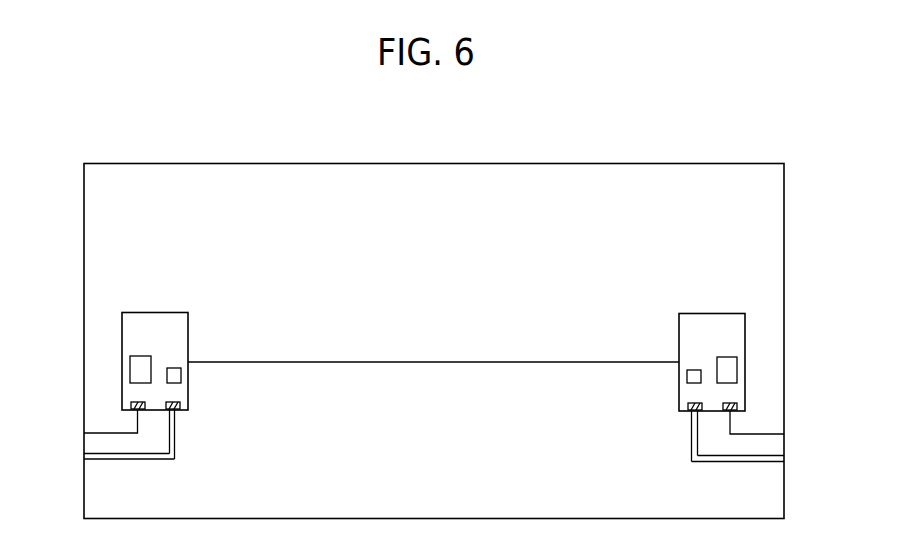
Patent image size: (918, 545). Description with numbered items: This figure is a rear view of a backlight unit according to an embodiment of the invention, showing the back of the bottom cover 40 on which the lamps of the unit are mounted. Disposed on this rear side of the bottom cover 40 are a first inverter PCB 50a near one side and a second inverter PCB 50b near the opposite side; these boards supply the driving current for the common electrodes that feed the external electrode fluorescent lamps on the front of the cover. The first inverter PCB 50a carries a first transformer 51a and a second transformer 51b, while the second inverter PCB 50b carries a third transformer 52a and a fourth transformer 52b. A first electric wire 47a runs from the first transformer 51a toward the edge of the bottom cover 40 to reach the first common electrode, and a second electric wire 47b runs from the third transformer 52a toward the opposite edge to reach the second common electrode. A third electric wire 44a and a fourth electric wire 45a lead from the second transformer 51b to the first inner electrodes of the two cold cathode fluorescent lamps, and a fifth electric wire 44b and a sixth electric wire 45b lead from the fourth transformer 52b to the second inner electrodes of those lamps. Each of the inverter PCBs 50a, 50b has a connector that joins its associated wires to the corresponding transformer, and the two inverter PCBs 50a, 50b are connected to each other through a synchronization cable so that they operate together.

The bottom cover 40 is at (673, 164).
The first inverter PCB 50a is at (160, 312).
The second inverter PCB 50b is at (710, 314).
The first transformer 51a is at (135, 356).
The second transformer 51b is at (173, 368).
The third transformer 52a is at (695, 370).
The fourth transformer 52b is at (731, 357).
The first electric wire 47a is at (108, 433).
The second electric wire 47b is at (756, 434).
The fourth electric wire 45a is at (174, 435).
The sixth electric wire 45b is at (698, 435).
The third electric wire 44a is at (174, 454).
The fifth electric wire 44b is at (698, 456).